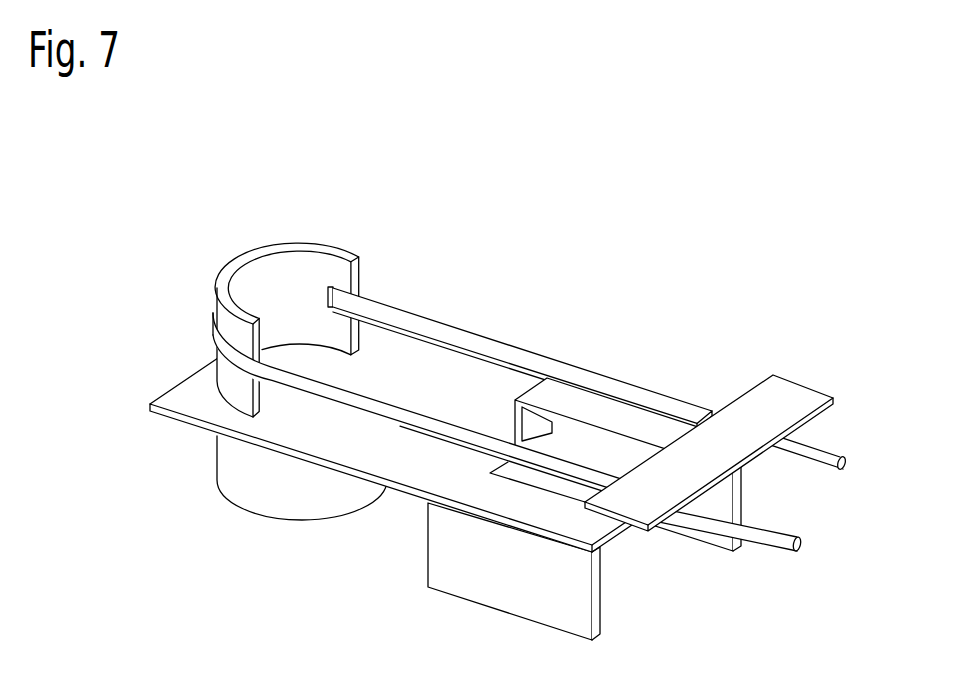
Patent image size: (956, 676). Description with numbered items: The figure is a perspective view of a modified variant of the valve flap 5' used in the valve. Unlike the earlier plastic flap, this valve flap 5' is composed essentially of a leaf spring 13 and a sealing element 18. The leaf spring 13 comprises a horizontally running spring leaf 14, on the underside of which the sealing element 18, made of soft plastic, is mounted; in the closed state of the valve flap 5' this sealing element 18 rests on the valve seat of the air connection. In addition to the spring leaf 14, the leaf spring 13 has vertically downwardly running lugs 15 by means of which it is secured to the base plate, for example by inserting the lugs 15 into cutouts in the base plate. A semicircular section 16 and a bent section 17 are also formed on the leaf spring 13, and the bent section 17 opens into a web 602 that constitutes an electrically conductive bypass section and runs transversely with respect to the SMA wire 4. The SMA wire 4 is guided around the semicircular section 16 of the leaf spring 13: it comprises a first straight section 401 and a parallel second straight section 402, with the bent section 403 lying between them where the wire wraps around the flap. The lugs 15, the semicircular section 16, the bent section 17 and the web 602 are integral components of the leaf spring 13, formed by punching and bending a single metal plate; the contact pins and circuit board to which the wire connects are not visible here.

The valve flap 5' is at (644, 128).
The leaf spring 13 is at (148, 404).
The spring leaf 14 is at (197, 397).
The lug 15 is at (427, 563).
The semicircular section 16 is at (246, 247).
The bent section 17 is at (514, 422).
The sealing element 18 is at (216, 462).
The SMA wire 4 is at (846, 448).
The first straight section 401 is at (635, 385).
The second straight section 402 is at (758, 549).
The bent section 403 is at (212, 316).
The web 602 is at (738, 396).